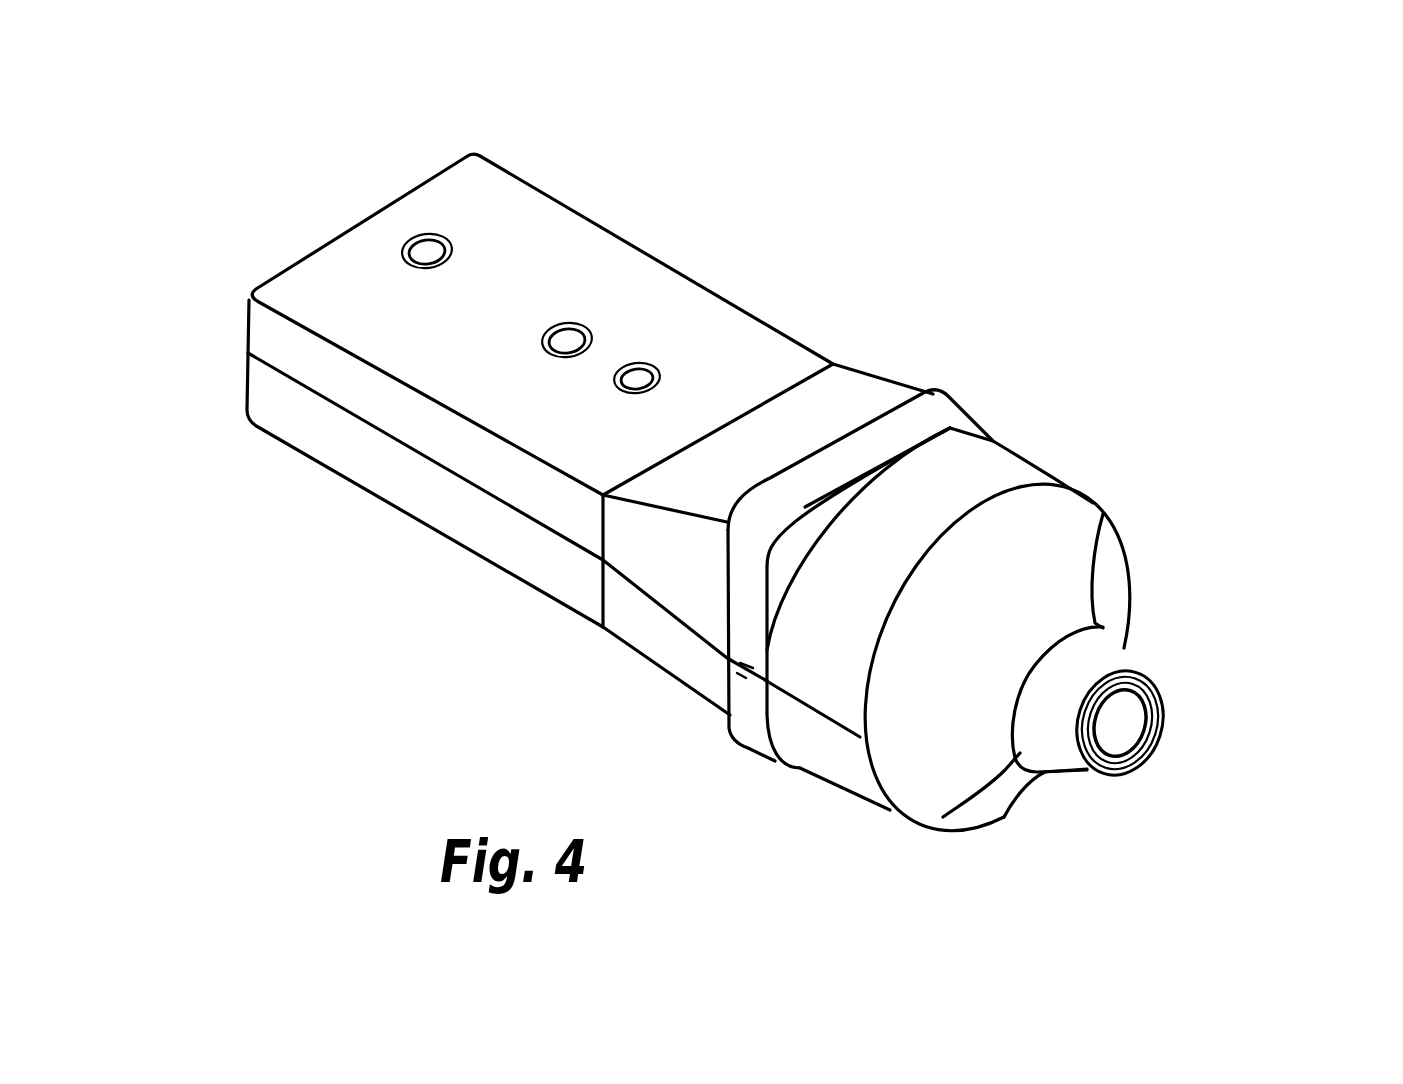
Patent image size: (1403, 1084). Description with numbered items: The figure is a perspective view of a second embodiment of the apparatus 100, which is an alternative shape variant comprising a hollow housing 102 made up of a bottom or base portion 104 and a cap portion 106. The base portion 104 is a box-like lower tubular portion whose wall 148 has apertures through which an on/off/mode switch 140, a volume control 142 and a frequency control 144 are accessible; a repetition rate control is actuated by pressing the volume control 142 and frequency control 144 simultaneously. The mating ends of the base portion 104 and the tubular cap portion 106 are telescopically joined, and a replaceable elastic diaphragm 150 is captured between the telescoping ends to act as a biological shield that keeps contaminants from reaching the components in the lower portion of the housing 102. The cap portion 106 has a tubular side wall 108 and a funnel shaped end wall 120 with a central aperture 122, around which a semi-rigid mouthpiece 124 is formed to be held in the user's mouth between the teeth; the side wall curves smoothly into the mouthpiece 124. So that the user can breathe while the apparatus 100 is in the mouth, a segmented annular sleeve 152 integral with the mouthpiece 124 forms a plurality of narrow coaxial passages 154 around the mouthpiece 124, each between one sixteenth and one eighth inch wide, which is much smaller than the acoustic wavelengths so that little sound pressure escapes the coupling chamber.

The apparatus 100 is at (898, 158).
The housing 102 is at (568, 190).
The base portion 104 is at (487, 175).
The cap portion 106 is at (993, 455).
The tubular side wall 108 is at (1017, 470).
The funnel shaped end wall 120 is at (1053, 545).
The central aperture 122 is at (1120, 717).
The mouthpiece 124 is at (1113, 658).
The on/off/mode switch 140 is at (427, 246).
The volume control 142 is at (569, 325).
The frequency control 144 is at (645, 372).
The wall 148 is at (435, 343).
The elastic diaphragm 150 is at (990, 455).
The segmented annular sleeve 152 is at (1158, 738).
The coaxial passages 154 is at (1093, 775).